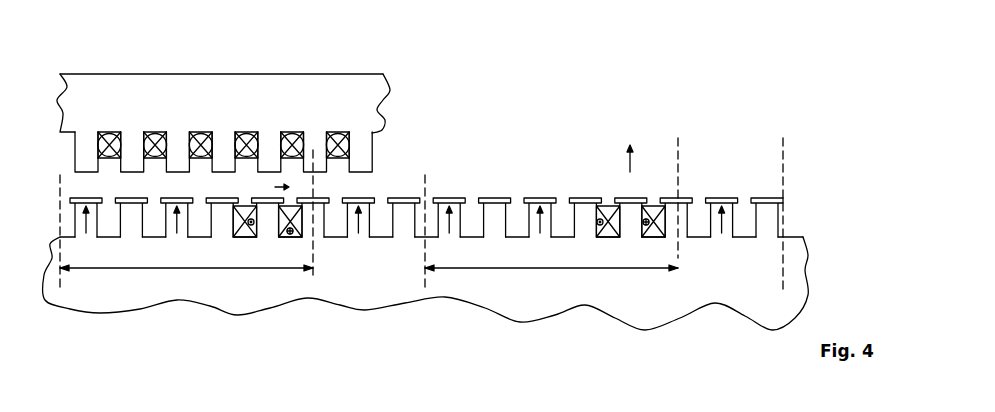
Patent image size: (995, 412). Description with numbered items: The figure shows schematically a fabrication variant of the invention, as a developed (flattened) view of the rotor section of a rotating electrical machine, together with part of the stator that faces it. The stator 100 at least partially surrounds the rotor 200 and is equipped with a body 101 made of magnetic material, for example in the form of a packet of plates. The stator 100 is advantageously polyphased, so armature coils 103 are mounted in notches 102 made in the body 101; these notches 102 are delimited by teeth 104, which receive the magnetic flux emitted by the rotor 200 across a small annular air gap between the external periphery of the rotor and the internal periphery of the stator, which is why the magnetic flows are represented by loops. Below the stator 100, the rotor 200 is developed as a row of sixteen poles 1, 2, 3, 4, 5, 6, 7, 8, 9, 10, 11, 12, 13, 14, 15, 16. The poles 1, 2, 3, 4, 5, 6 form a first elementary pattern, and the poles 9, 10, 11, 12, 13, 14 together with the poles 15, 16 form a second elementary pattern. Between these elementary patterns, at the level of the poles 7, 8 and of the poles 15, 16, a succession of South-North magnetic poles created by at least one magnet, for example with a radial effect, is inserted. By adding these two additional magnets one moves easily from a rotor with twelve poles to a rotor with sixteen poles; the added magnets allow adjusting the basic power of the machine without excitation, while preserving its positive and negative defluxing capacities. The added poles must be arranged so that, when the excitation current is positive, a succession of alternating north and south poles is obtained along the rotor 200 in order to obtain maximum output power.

The stator 100 is at (269, 72).
The body 101 is at (223, 103).
The notches 102 is at (212, 165).
The armature coils 103 is at (155, 133).
The teeth 104 is at (310, 141).
The rotor 200 is at (425, 226).
The pole 1 is at (86, 217).
The pole 2 is at (131, 217).
The pole 3 is at (177, 217).
The pole 4 is at (222, 217).
The pole 5 is at (268, 228).
The pole 6 is at (313, 217).
The pole 7 is at (358, 217).
The pole 8 is at (404, 217).
The pole 9 is at (449, 217).
The pole 10 is at (495, 217).
The pole 11 is at (540, 217).
The pole 12 is at (585, 217).
The pole 13 is at (631, 217).
The pole 14 is at (676, 217).
The pole 15 is at (722, 217).
The pole 16 is at (767, 217).